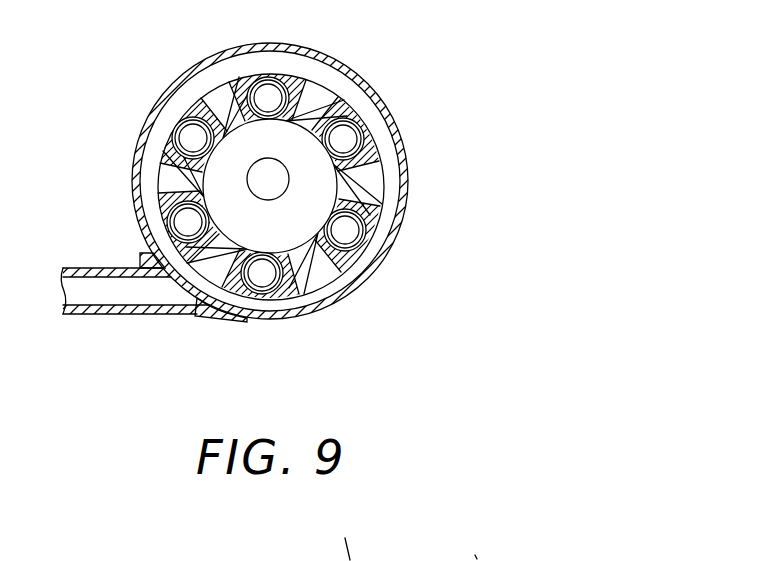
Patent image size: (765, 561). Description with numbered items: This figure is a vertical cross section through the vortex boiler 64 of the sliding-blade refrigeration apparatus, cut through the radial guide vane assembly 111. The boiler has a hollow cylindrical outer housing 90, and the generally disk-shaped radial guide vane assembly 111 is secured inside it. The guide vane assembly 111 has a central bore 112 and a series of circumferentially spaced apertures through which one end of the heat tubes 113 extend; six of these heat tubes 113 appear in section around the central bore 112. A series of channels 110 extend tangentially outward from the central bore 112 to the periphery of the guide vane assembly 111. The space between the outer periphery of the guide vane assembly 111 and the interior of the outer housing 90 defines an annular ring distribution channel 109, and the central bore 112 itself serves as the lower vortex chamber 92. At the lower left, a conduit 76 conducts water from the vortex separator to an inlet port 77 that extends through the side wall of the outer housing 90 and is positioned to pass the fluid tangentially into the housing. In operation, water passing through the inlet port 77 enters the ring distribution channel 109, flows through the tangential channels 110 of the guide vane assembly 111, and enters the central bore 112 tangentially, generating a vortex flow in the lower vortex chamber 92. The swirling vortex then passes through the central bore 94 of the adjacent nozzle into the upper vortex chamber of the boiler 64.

The vortex boiler 64 is at (384, 90).
The conduit 76 is at (117, 293).
The inlet port 77 is at (198, 298).
The outer housing 90 is at (277, 47).
The lower vortex chamber 92 is at (317, 93).
The central bore 94 is at (275, 180).
The annular ring distribution channel 109 is at (295, 302).
The channels 110 is at (308, 278).
The radial guide vane assembly 111 is at (343, 268).
The central bore 112 is at (315, 178).
The heat tubes 113 is at (162, 200).